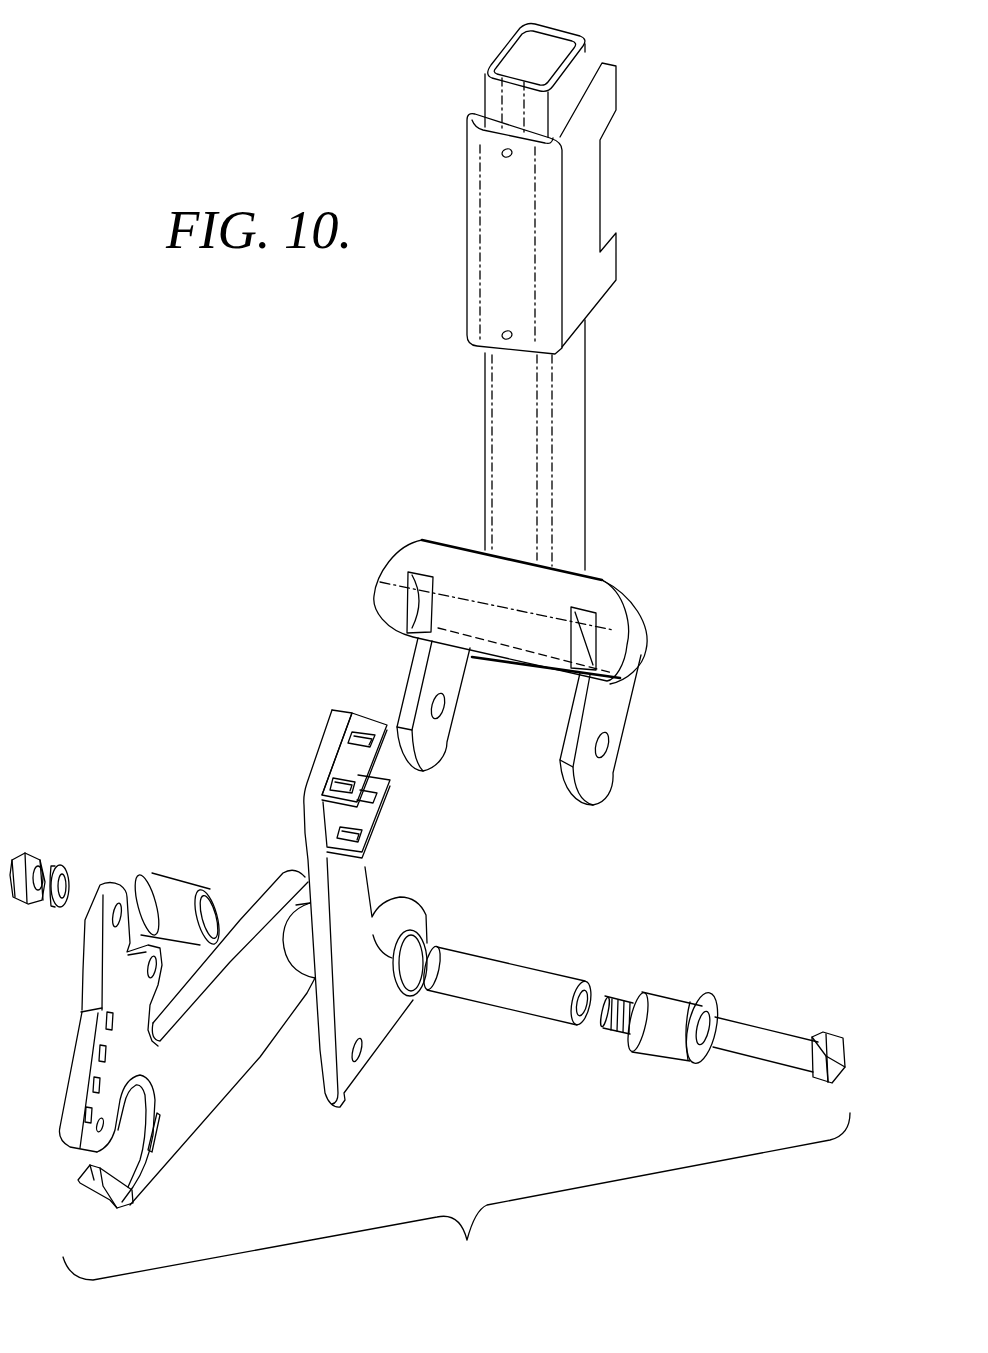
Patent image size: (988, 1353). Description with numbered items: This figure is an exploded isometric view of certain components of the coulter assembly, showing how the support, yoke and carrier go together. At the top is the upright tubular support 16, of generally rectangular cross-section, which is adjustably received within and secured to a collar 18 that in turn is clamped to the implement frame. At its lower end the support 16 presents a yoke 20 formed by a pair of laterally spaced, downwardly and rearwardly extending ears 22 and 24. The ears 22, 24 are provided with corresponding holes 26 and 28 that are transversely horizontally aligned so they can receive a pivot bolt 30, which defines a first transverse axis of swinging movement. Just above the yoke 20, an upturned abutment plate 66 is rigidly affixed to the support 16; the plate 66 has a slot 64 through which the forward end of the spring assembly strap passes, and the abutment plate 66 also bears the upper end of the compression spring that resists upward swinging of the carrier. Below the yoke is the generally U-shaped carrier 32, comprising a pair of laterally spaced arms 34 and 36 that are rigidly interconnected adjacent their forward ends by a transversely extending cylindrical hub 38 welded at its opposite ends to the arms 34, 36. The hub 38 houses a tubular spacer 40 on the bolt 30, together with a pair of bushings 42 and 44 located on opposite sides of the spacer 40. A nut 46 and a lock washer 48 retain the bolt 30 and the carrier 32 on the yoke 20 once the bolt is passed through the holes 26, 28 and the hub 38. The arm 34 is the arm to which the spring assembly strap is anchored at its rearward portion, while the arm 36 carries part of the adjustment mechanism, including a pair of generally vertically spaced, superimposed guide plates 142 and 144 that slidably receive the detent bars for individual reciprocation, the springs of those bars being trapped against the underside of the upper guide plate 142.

The upright tubular support 16 is at (572, 455).
The collar 18 is at (587, 190).
The yoke 20 is at (537, 649).
The ear 22 is at (433, 704).
The ear 24 is at (623, 734).
The hole 26 is at (444, 707).
The hole 28 is at (608, 747).
The pivot bolt 30 is at (793, 1043).
The carrier 32 is at (253, 959).
The arm 34 is at (183, 1123).
The arm 36 is at (346, 908).
The cylindrical hub 38 is at (290, 958).
The tubular spacer 40 is at (505, 970).
The bushing 42 is at (181, 892).
The bushing 44 is at (670, 1002).
The nut 46 is at (27, 857).
The lock washer 48 is at (72, 871).
The slot 64 is at (395, 568).
The abutment plate 66 is at (453, 555).
The guide plate 142 is at (352, 758).
The guide plate 144 is at (367, 810).